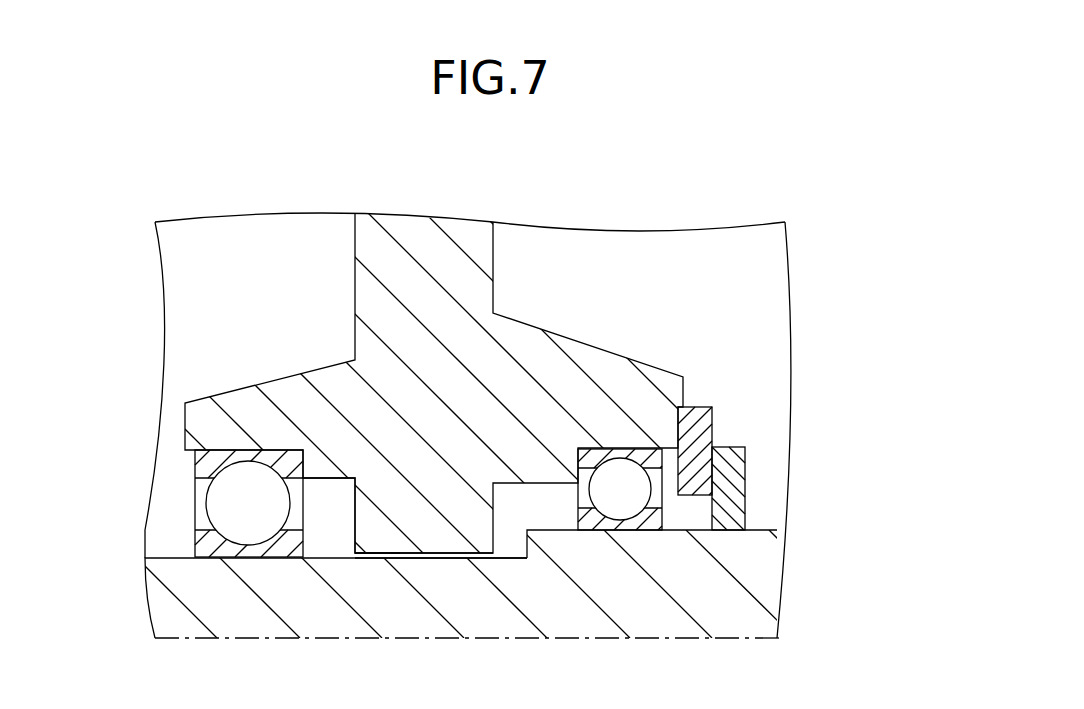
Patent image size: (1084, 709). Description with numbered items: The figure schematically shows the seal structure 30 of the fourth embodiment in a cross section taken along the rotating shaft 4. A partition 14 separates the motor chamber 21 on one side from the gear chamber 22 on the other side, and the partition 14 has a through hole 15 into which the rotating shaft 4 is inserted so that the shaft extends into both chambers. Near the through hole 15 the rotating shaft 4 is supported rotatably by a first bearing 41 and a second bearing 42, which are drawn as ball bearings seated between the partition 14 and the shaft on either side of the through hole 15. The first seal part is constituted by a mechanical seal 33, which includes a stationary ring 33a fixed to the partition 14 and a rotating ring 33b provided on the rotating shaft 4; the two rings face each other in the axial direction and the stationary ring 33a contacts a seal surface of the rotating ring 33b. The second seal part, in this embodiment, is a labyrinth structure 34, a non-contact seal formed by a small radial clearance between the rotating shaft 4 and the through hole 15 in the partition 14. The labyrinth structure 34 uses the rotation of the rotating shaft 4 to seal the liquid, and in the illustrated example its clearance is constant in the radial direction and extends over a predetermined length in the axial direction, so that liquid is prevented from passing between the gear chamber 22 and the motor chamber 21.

The rotating shaft 4 is at (750, 573).
The partition 14 is at (458, 271).
The through hole 15 is at (450, 560).
The motor chamber 21 is at (704, 282).
The gear chamber 22 is at (226, 282).
The seal structure 30 is at (502, 409).
The mechanical seal 33 is at (803, 457).
The stationary ring 33a is at (697, 423).
The rotating ring 33b is at (733, 485).
The labyrinth structure 34 is at (348, 549).
The first bearing 41 is at (570, 503).
The second bearing 42 is at (186, 505).